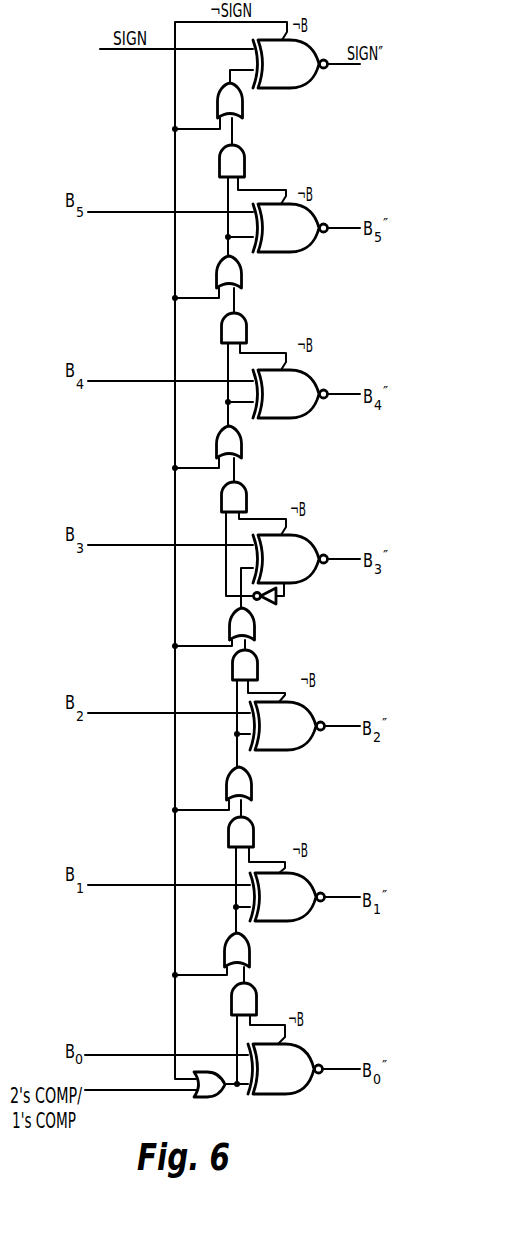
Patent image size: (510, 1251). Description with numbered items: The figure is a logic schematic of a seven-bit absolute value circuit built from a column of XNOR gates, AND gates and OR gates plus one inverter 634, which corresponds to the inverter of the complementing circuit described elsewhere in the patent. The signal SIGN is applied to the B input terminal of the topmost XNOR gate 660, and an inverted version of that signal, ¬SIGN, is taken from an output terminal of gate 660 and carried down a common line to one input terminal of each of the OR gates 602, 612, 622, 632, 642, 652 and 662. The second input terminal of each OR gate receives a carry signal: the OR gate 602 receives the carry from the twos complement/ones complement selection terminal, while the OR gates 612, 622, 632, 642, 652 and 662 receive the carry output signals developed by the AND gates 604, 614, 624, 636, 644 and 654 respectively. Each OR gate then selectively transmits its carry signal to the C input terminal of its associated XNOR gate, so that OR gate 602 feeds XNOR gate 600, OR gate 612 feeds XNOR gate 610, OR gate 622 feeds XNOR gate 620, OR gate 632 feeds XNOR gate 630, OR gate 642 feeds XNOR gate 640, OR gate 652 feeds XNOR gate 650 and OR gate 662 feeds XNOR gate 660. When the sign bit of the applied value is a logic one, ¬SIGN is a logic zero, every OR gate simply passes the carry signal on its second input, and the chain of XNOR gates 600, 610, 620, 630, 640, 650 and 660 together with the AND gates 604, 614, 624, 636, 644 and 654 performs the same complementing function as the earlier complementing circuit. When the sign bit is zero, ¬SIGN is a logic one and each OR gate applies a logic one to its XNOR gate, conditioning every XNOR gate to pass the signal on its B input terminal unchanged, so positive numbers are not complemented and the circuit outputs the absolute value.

The XNOR gate 660 is at (302, 47).
The OR gate 662 is at (243, 110).
The AND gate 654 is at (246, 164).
The XNOR gate 650 is at (297, 252).
The OR gate 652 is at (243, 278).
The AND gate 644 is at (247, 333).
The XNOR gate 640 is at (300, 371).
The OR gate 642 is at (243, 442).
The AND gate 636 is at (250, 495).
The XNOR gate 630 is at (300, 538).
The inverter 634 is at (273, 605).
The OR gate 632 is at (255, 638).
The AND gate 624 is at (262, 672).
The XNOR gate 620 is at (298, 708).
The OR gate 622 is at (255, 780).
The AND gate 614 is at (254, 833).
The XNOR gate 610 is at (298, 878).
The OR gate 612 is at (251, 957).
The AND gate 604 is at (257, 1003).
The XNOR gate 600 is at (302, 1050).
The OR gate 602 is at (220, 1097).